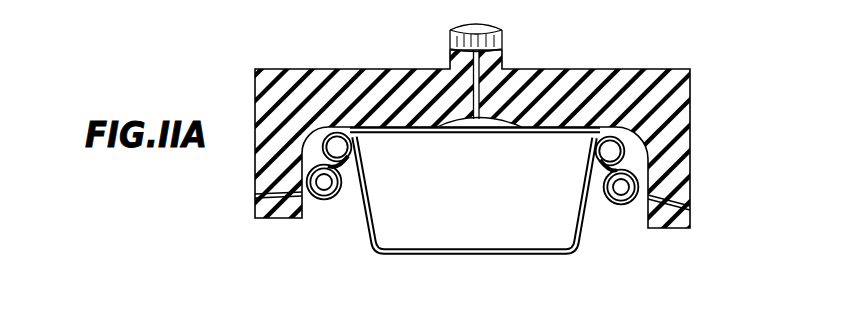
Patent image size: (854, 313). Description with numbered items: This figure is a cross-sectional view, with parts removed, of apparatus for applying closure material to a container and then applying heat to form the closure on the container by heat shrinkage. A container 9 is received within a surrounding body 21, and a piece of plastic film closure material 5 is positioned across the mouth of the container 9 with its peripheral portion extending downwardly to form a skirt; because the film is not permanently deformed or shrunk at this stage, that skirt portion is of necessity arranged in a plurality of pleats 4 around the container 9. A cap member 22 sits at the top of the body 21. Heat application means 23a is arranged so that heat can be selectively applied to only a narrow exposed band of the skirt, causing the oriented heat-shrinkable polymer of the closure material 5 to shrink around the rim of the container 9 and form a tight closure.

The housing block 21 is at (608, 78).
The cap screw 22 is at (497, 44).
The heat application means 23a is at (690, 207).
The container 9 is at (364, 236).
The pleats 4 is at (454, 133).
The plastic film closure material 5 is at (560, 134).